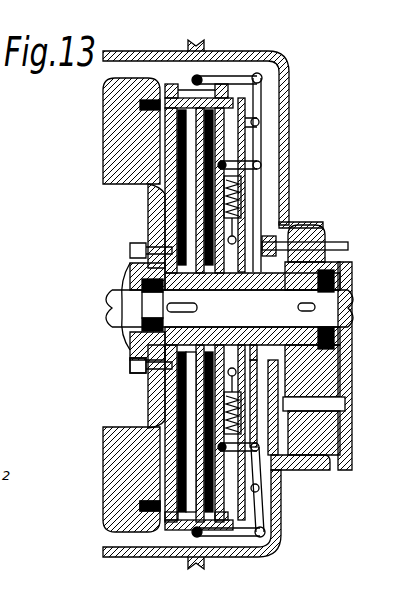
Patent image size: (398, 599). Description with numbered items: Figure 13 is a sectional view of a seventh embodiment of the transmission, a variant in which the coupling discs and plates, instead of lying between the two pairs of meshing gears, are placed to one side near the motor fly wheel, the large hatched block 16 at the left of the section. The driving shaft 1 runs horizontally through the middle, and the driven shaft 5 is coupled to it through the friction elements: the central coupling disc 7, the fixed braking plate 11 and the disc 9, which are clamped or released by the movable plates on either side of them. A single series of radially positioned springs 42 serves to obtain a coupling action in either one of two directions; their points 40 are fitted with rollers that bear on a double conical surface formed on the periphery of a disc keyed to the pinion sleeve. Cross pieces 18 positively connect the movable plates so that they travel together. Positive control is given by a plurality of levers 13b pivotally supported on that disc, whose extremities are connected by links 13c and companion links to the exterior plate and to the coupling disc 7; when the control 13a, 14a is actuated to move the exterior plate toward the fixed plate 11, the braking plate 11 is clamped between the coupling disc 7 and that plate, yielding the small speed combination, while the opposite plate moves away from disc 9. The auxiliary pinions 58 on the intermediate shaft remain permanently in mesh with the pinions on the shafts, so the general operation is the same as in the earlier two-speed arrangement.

The driving shaft 1 is at (112, 293).
The driven shaft 5 is at (150, 338).
The central coupling disc 7 is at (215, 148).
The disc 9 is at (178, 183).
The fixed plate 11 is at (205, 178).
The control 13a is at (265, 282).
The lever 13b is at (257, 148).
The link 13c is at (240, 78).
The control 14a is at (268, 240).
The flywheel 16 is at (122, 92).
The cross piece 18 is at (205, 95).
The spring point 40 is at (238, 240).
The spring 42 is at (243, 190).
The auxiliary pinion 58 is at (250, 345).